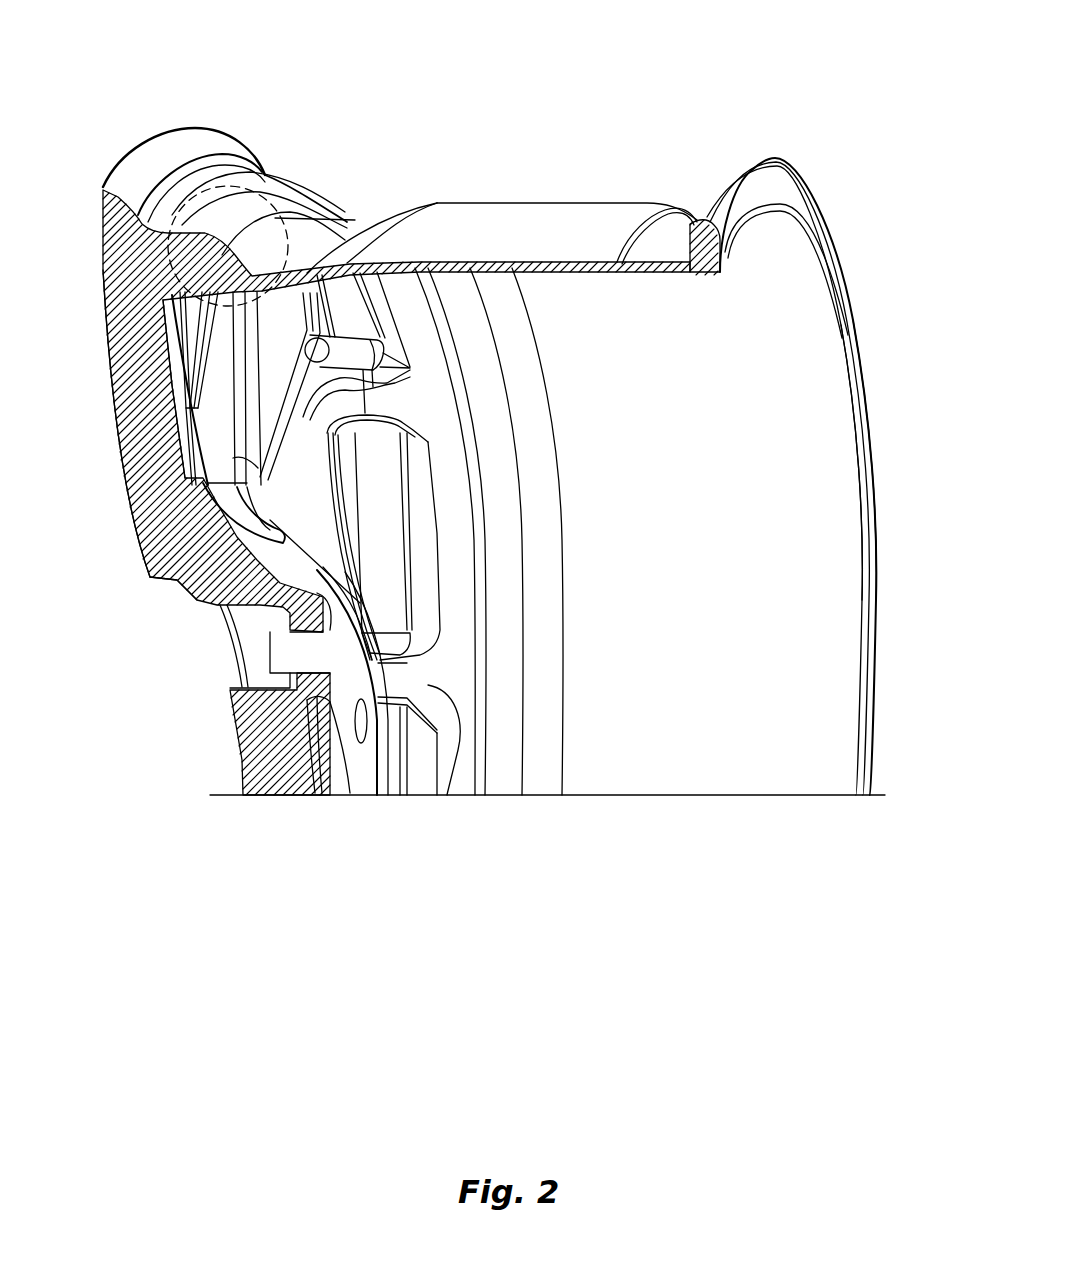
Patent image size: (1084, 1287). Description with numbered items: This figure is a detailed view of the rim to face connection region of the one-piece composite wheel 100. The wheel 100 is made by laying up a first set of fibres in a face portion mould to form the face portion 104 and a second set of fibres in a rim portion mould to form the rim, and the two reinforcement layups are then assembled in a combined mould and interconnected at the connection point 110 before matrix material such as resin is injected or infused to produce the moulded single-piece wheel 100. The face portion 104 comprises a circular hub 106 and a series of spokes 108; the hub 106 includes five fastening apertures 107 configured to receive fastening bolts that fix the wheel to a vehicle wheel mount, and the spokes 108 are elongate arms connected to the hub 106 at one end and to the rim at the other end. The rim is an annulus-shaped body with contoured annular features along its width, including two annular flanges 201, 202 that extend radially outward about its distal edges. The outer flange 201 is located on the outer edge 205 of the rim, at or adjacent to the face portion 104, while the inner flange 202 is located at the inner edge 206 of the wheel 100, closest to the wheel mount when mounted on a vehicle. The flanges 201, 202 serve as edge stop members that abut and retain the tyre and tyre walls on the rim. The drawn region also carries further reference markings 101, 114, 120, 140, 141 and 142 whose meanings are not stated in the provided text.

The composite wheel 100 is at (856, 78).
The bead seat region 101 is at (266, 176).
The face portion 104 is at (170, 638).
The circular hub 106 is at (333, 790).
The fastening apertures 107 is at (362, 720).
The spokes 108 is at (428, 688).
The connection point 110 is at (140, 128).
The spokes 114 is at (675, 130).
The rim well 120 is at (730, 160).
The inboard flange 140 is at (828, 527).
The flange wall 141 is at (135, 240).
The flange wall 142 is at (215, 266).
The outer flange 201 is at (103, 193).
The inner flange 202 is at (776, 163).
The outer edge 205 is at (112, 551).
The inner edge 206 is at (880, 682).